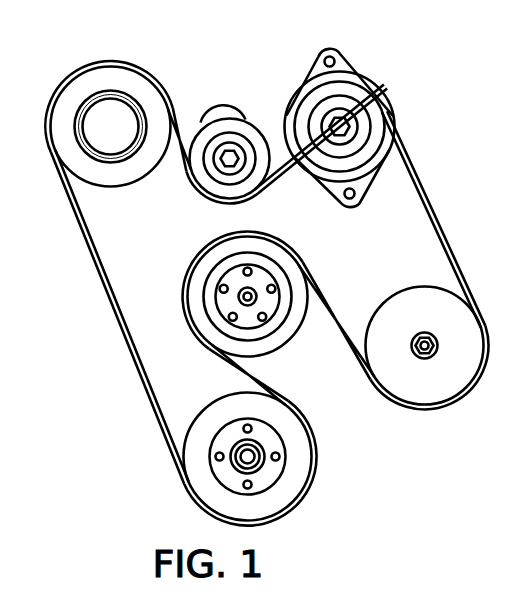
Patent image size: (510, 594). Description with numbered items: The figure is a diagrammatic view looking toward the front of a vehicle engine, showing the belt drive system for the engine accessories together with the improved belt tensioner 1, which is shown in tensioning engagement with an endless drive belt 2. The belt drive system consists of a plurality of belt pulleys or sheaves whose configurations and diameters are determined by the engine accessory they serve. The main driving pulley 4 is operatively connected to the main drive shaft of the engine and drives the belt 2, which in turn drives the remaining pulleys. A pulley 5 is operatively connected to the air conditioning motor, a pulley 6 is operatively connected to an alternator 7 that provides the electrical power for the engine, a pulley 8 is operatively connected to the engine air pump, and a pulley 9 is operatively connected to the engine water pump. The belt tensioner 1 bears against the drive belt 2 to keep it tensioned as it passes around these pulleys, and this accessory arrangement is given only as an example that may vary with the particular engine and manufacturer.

The belt tensioner 1 is at (233, 104).
The endless drive belt 2 is at (413, 200).
The main driving pulley 4 is at (285, 493).
The pulley 5 is at (121, 87).
The pulley 6 is at (359, 118).
The alternator 7 is at (384, 118).
The pulley 8 is at (446, 383).
The pulley 9 is at (288, 270).